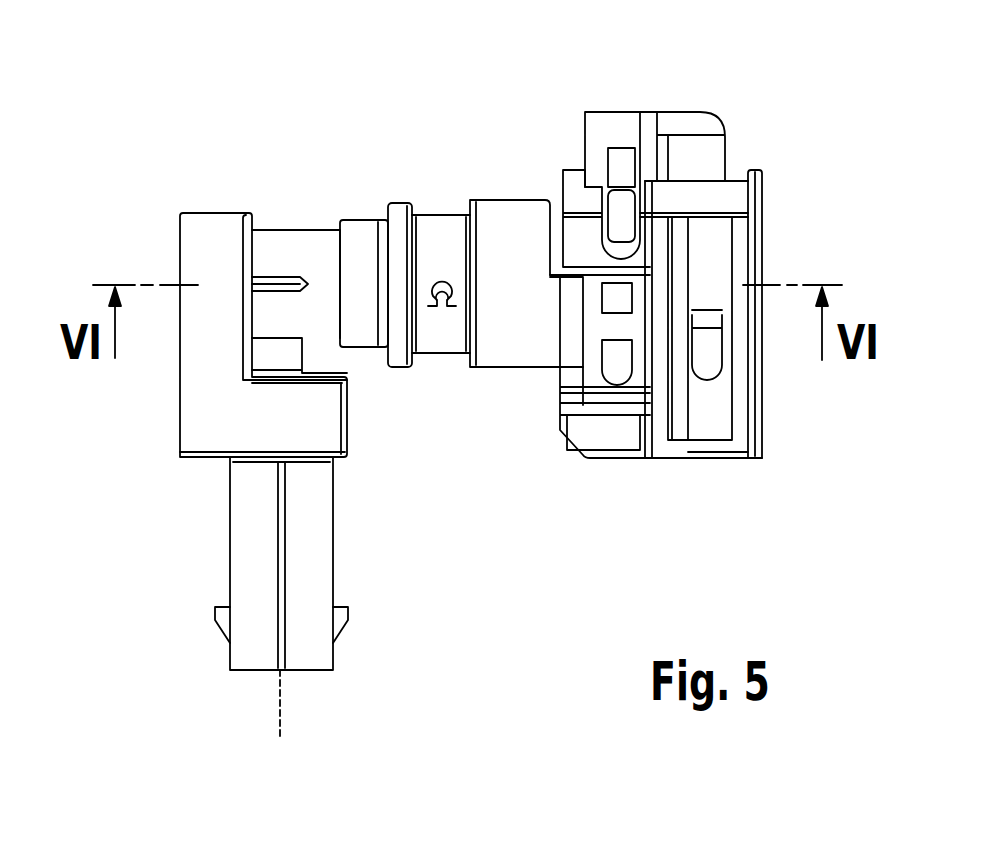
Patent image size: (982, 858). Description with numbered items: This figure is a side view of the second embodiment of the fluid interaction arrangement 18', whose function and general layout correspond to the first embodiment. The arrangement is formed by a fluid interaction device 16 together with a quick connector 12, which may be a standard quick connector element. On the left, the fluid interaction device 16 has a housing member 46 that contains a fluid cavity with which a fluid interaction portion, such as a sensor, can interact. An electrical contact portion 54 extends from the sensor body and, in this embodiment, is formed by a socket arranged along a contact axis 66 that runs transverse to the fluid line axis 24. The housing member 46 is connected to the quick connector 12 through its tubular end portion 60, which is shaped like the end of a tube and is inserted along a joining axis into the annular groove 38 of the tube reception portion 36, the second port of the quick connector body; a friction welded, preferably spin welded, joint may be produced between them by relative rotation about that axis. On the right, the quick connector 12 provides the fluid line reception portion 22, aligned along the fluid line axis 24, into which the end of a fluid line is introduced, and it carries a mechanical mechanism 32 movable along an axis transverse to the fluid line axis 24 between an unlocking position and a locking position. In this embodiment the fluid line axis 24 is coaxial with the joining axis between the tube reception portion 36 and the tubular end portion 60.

The fluid interaction device 16 is at (190, 131).
The quick connector 12 is at (560, 132).
The tube reception portion 36 is at (402, 196).
The annular groove 38 is at (358, 219).
The tubular end portion 60 is at (297, 227).
The mechanical mechanism 32 is at (670, 110).
The fluid interaction arrangement 18' is at (686, 230).
The fluid line axis 24 is at (790, 284).
The fluid line reception portion 22 is at (762, 408).
The housing member 46 is at (180, 405).
The electrical contact portion 54 is at (230, 565).
The contact axis 66 is at (280, 712).